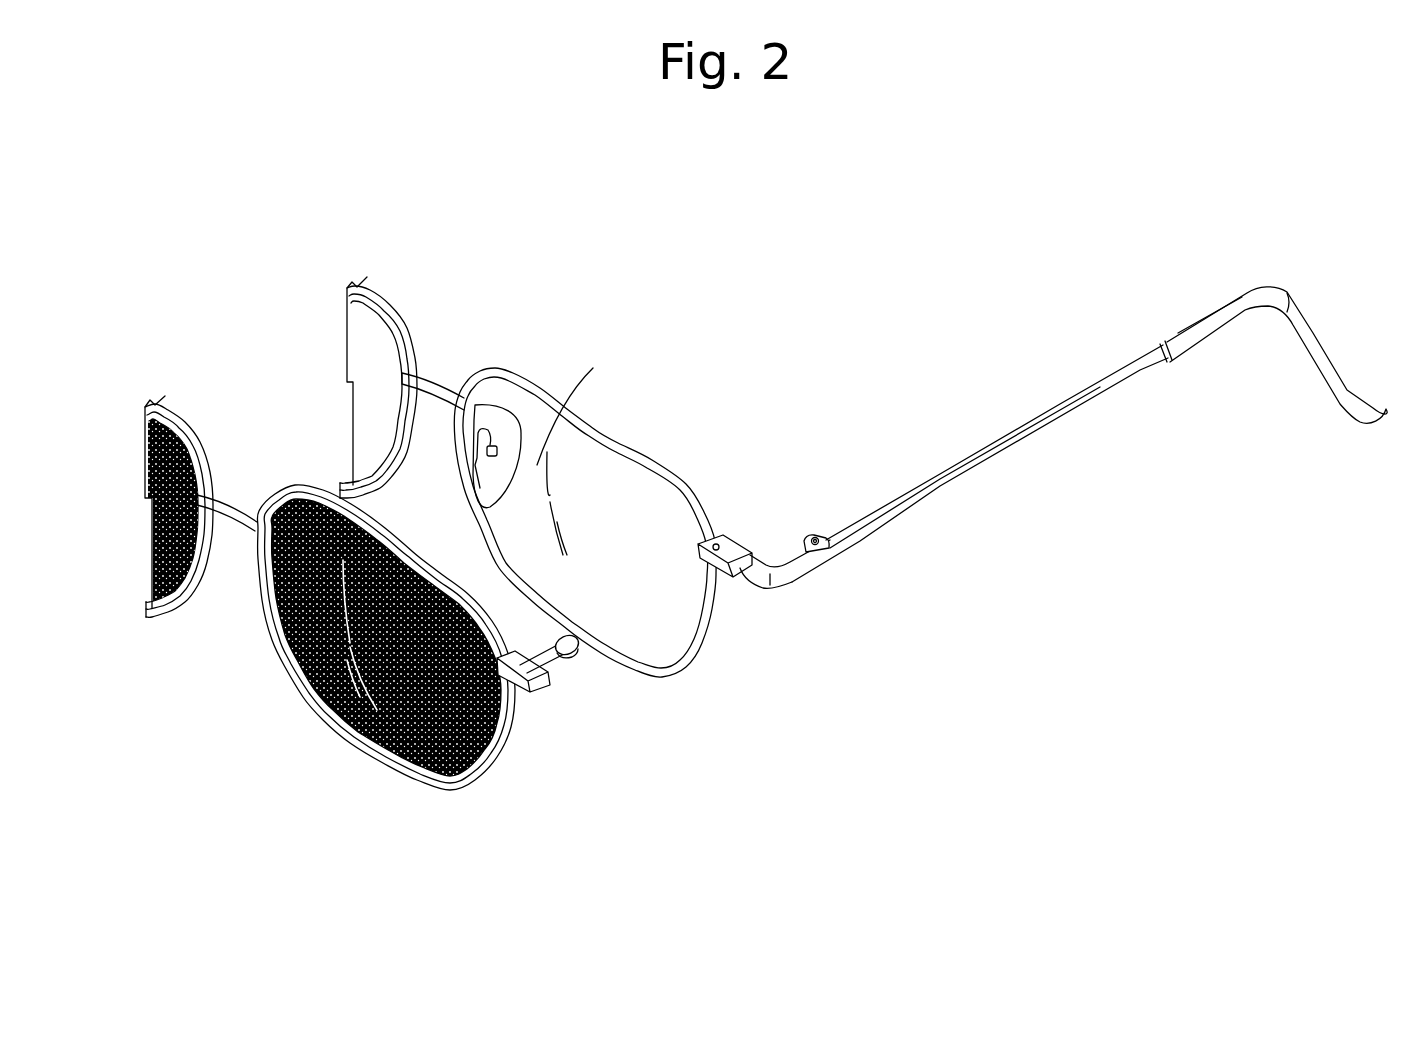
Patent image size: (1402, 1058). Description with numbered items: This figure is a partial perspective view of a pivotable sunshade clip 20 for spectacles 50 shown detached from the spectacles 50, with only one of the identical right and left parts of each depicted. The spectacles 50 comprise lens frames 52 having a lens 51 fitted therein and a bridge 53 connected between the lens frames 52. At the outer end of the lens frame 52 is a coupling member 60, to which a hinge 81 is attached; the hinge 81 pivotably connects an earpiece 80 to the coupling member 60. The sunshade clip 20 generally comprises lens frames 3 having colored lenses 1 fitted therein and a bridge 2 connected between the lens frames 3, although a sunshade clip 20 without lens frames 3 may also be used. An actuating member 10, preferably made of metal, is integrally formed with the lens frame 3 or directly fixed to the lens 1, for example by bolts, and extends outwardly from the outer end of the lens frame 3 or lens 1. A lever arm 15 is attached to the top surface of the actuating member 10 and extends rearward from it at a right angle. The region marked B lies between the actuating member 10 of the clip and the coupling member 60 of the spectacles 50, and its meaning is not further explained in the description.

The colored lens 1 is at (337, 704).
The bridge 2 is at (224, 497).
The lens frame 3 is at (385, 766).
The actuating member 10 is at (539, 686).
The lever arm 15 is at (561, 666).
The pivotable sunshade clip 20 is at (250, 681).
The spectacles 50 is at (712, 418).
The lens 51 is at (600, 430).
The lens frame 52 is at (540, 470).
The bridge 53 is at (438, 382).
The coupling member 60 is at (750, 537).
The earpiece 80 is at (1083, 410).
The hinge 81 is at (835, 555).
The coupling gap B is at (588, 712).